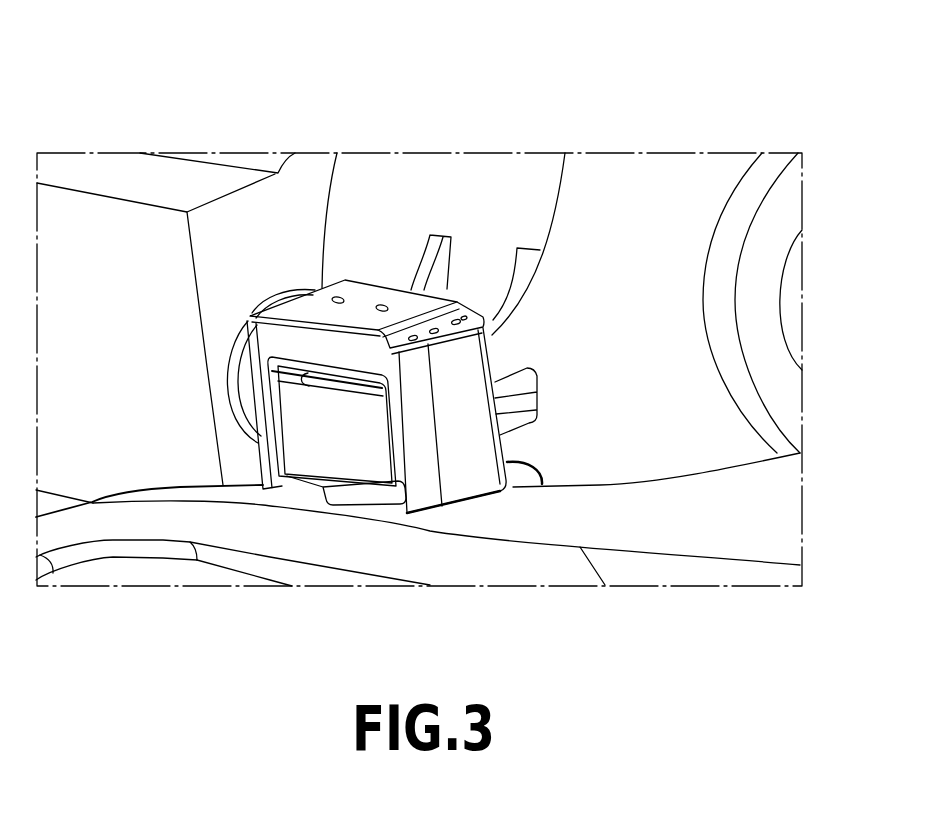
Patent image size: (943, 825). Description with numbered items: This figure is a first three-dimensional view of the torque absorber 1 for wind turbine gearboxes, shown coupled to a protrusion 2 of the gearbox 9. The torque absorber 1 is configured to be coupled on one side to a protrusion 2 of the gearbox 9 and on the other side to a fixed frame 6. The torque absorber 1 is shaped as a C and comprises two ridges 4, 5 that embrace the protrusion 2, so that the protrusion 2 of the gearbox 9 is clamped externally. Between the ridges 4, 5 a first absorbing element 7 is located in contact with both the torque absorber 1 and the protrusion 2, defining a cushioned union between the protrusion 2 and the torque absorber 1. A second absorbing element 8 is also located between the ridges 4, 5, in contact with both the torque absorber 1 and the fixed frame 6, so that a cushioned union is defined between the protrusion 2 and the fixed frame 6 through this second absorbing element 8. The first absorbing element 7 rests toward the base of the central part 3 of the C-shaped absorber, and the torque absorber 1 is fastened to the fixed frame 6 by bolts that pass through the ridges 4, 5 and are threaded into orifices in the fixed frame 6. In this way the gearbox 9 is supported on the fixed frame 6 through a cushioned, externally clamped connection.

The torque absorber 1 is at (317, 290).
The protrusion 2 is at (347, 423).
The central part 3 is at (344, 358).
The ridge 4 is at (250, 322).
The ridge 5 is at (468, 460).
The fixed frame 6 is at (722, 525).
The first absorbing element 7 is at (330, 376).
The second absorbing element 8 is at (348, 502).
The gearbox 9 is at (770, 313).